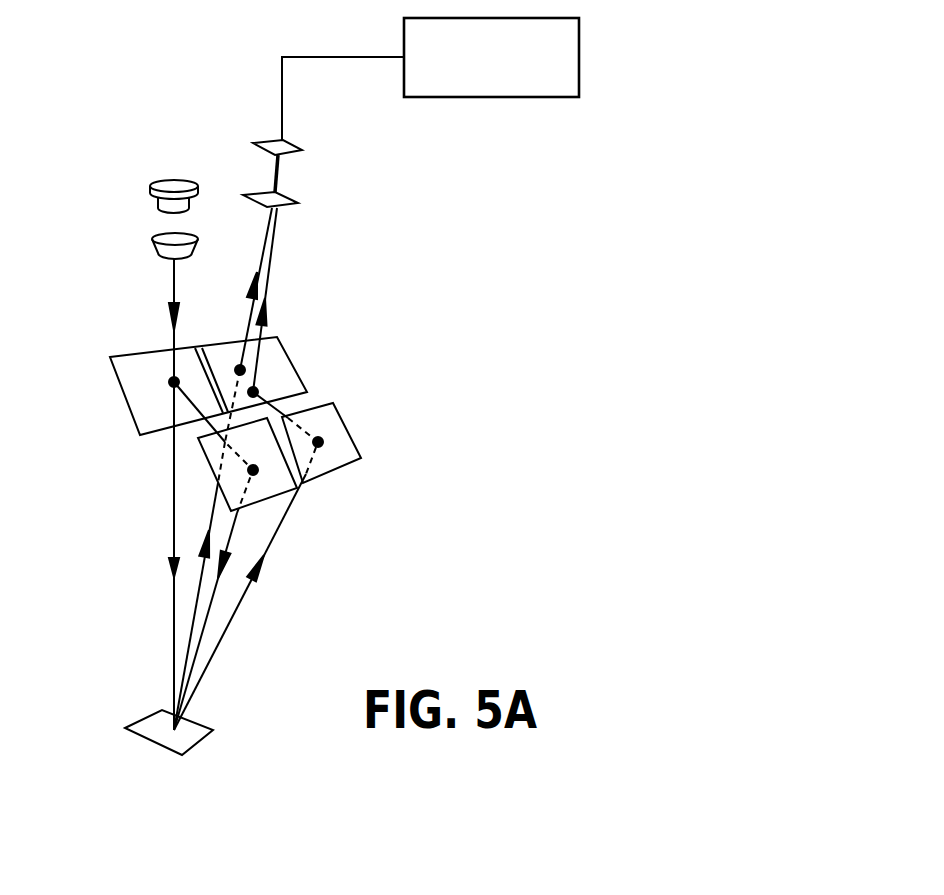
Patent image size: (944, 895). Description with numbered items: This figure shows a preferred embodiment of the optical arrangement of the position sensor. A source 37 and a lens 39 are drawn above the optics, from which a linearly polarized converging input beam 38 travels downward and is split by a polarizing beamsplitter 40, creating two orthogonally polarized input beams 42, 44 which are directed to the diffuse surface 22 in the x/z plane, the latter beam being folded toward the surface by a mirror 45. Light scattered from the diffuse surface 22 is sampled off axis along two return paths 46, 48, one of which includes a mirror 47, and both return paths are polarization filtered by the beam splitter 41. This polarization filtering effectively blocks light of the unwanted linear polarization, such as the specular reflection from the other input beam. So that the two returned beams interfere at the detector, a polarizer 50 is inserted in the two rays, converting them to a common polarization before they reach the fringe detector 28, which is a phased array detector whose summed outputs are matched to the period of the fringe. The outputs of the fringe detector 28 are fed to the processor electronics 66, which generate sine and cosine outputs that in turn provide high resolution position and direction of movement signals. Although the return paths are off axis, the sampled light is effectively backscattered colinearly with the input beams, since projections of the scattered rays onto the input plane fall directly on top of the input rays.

The diffuse surface 22 is at (141, 726).
The fringe detector 28 is at (298, 147).
The light source 37 is at (170, 181).
The input beam 38 is at (172, 281).
The lens 39 is at (155, 237).
The polarizing beamsplitter 40 is at (127, 400).
The beam splitter 41 is at (293, 363).
The input beam 42 is at (172, 502).
The input beam 44 is at (237, 530).
The mirror 45 is at (206, 452).
The return path 46 is at (195, 605).
The mirror 47 is at (353, 432).
The return path 48 is at (245, 593).
The polarizer 50 is at (288, 208).
The processor electronics 66 is at (500, 97).